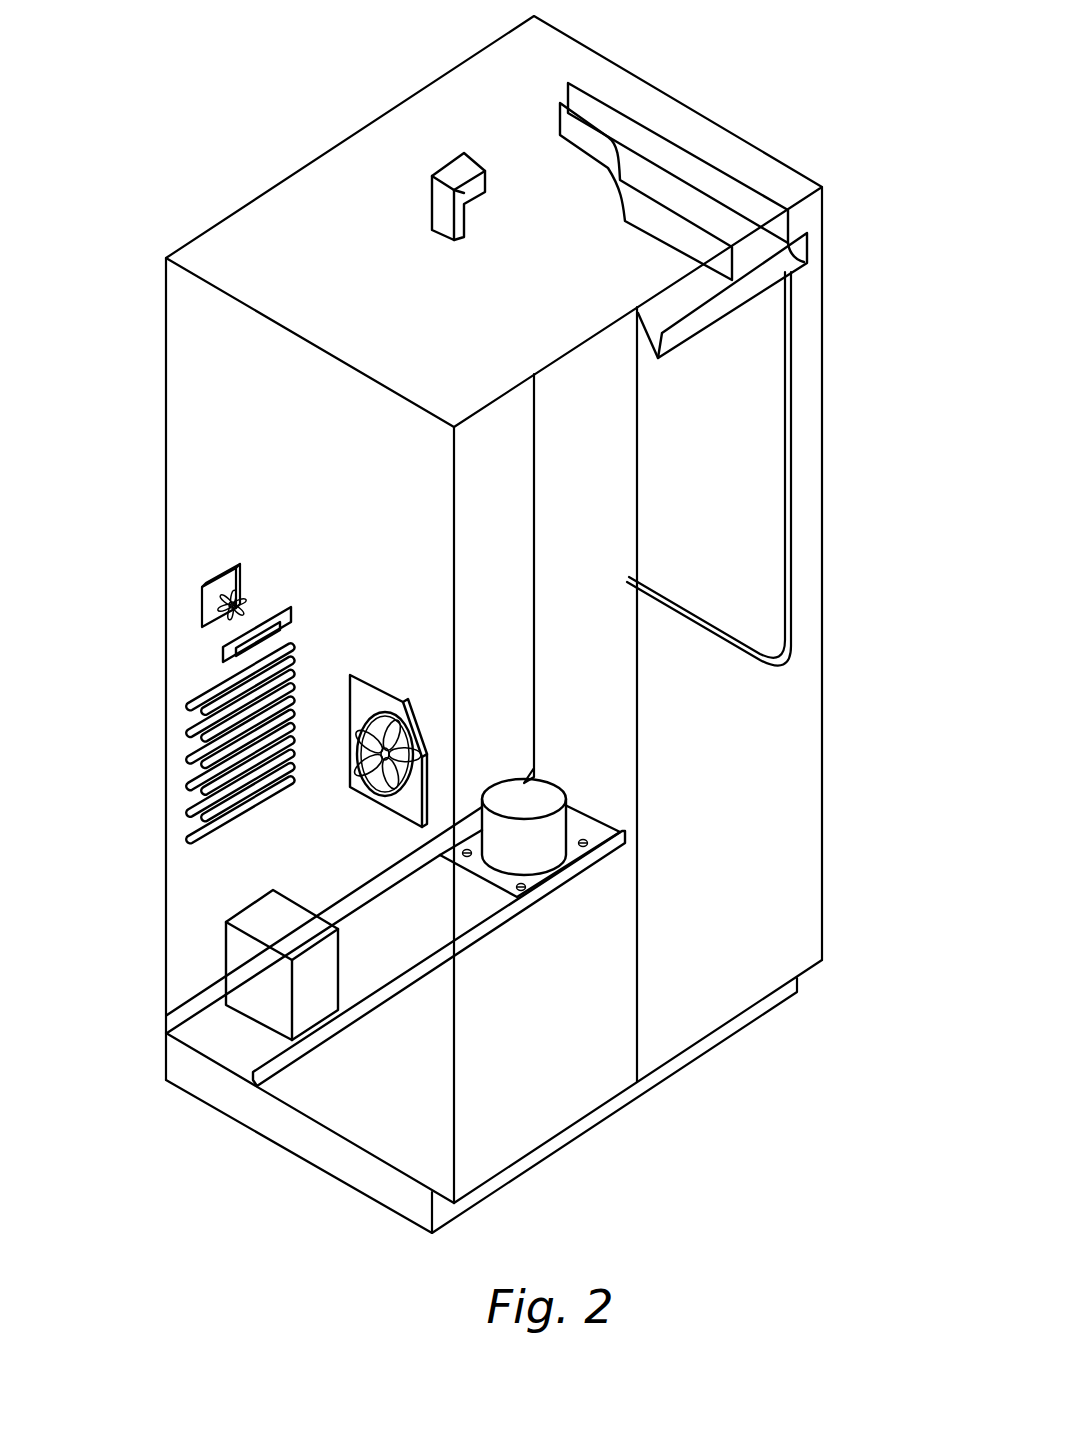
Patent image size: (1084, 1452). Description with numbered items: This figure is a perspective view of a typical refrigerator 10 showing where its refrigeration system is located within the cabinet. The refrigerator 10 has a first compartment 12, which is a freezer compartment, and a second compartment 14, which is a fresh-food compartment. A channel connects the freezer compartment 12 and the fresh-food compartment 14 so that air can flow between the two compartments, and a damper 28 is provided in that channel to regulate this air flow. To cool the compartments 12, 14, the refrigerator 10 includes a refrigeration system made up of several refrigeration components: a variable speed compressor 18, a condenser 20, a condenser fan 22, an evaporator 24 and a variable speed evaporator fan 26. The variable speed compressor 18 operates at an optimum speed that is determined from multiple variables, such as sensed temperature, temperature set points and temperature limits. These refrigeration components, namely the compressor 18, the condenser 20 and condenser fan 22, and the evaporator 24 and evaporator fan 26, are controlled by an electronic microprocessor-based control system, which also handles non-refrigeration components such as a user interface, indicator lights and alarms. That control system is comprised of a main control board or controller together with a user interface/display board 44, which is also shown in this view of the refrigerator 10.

The refrigerator 10 is at (816, 97).
The first compartment 12 is at (535, 1093).
The second compartment 14 is at (793, 738).
The variable speed compressor 18 is at (553, 830).
The condenser 20 is at (240, 956).
The condenser fan 22 is at (372, 789).
The evaporator 24 is at (190, 753).
The variable speed evaporator fan 26 is at (202, 612).
The damper 28 is at (445, 197).
The user interface/display board 44 is at (798, 253).